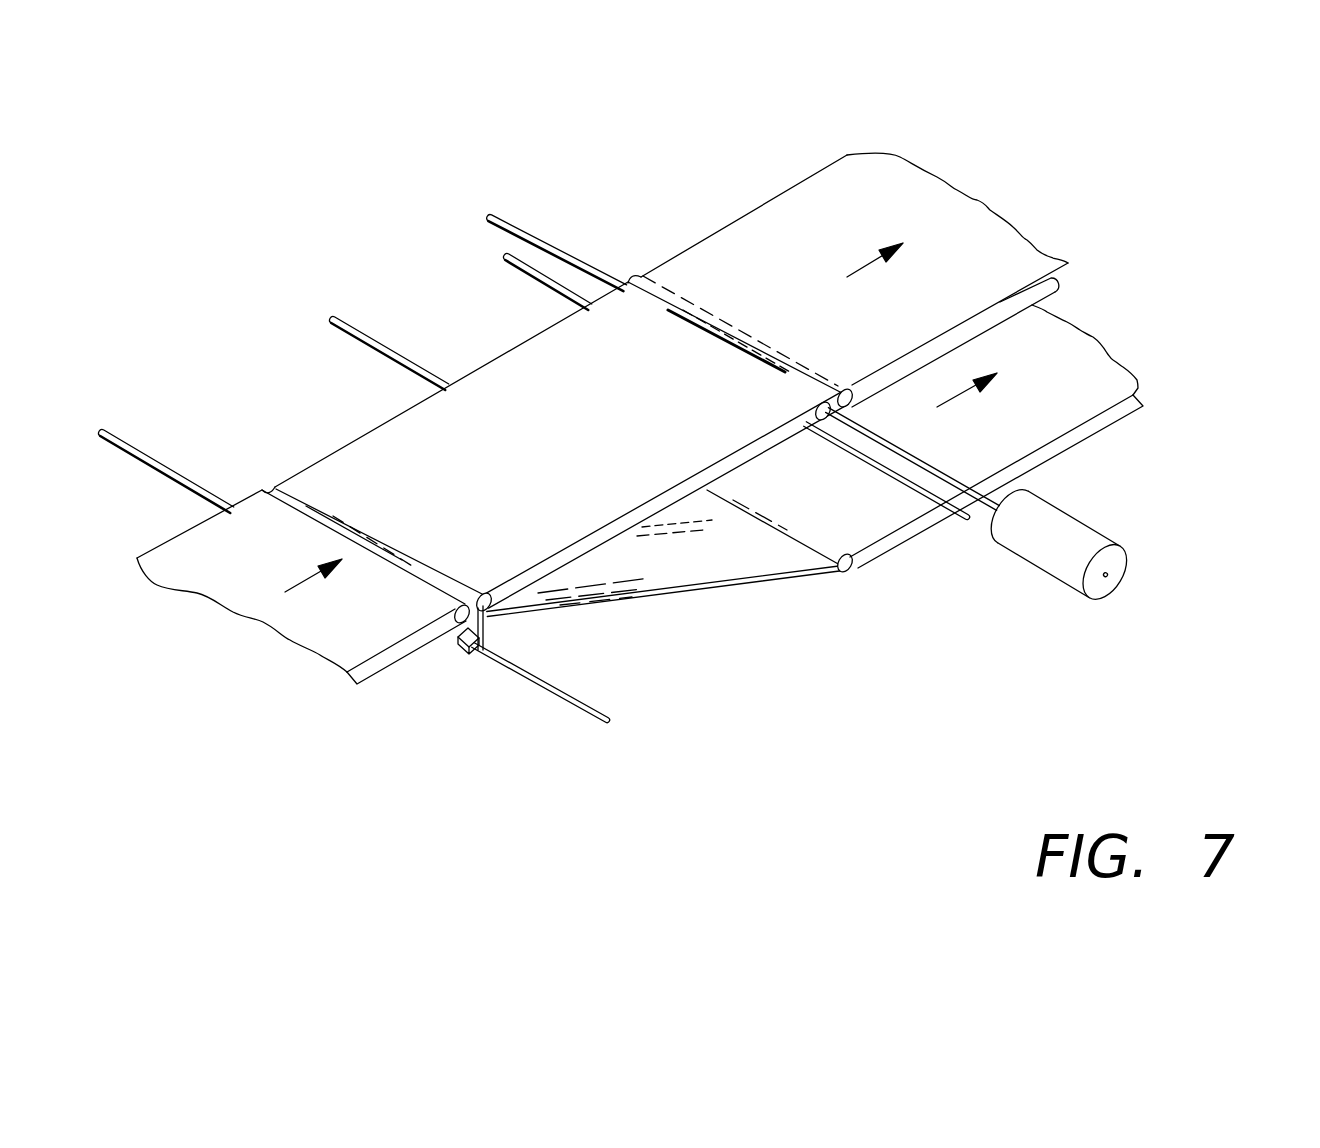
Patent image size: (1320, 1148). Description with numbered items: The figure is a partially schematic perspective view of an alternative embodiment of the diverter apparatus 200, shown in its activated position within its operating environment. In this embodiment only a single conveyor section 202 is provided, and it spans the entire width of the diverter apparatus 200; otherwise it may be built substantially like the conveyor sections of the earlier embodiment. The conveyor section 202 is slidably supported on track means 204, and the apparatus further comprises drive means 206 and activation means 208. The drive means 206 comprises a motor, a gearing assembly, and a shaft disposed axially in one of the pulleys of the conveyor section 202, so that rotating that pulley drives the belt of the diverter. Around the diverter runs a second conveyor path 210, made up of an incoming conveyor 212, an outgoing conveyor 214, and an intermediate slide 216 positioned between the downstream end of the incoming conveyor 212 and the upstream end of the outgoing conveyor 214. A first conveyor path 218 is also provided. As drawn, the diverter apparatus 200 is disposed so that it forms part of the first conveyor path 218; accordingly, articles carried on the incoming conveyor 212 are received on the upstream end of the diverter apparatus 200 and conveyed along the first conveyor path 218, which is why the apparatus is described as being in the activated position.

The diverter apparatus 200 is at (348, 252).
The conveyor section 202 is at (385, 418).
The track means 204 is at (588, 707).
The drive means 206 is at (1080, 540).
The activation means 208 is at (388, 341).
The second conveyor path 210 is at (463, 656).
The incoming conveyor 212 is at (338, 628).
The outgoing conveyor 214 is at (1090, 377).
The intermediate slide 216 is at (640, 570).
The first conveyor path 218 is at (995, 268).